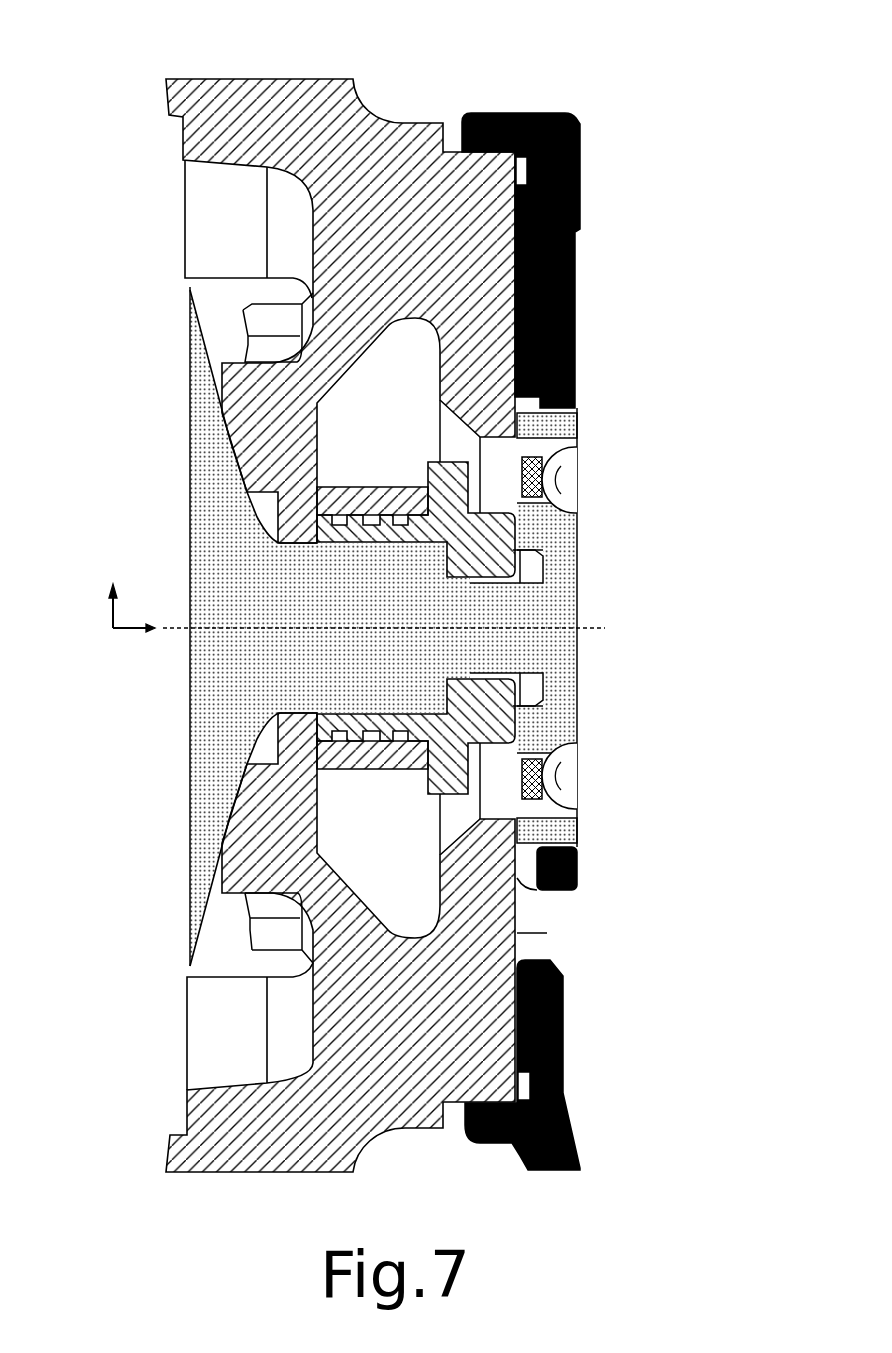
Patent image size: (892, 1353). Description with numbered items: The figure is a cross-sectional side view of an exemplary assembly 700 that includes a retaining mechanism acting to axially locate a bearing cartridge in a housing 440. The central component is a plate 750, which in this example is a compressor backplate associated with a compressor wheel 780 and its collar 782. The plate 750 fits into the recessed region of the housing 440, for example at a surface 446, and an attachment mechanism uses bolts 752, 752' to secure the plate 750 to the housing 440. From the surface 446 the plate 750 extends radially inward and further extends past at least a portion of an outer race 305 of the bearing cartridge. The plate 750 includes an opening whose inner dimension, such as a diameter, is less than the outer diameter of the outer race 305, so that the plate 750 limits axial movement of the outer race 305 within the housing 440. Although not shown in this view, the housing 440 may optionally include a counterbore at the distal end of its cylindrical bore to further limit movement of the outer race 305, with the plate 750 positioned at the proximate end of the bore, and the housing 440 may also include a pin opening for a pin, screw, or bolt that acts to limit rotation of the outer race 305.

The assembly 700 is at (211, 40).
The plate 750 is at (468, 255).
The bolt 752 is at (219, 318).
The bolt 752' is at (218, 941).
The compressor wheel 780 is at (366, 606).
The collar 782 is at (500, 555).
The housing 440 is at (540, 112).
The surface 446 is at (517, 322).
The outer race 305 is at (573, 428).